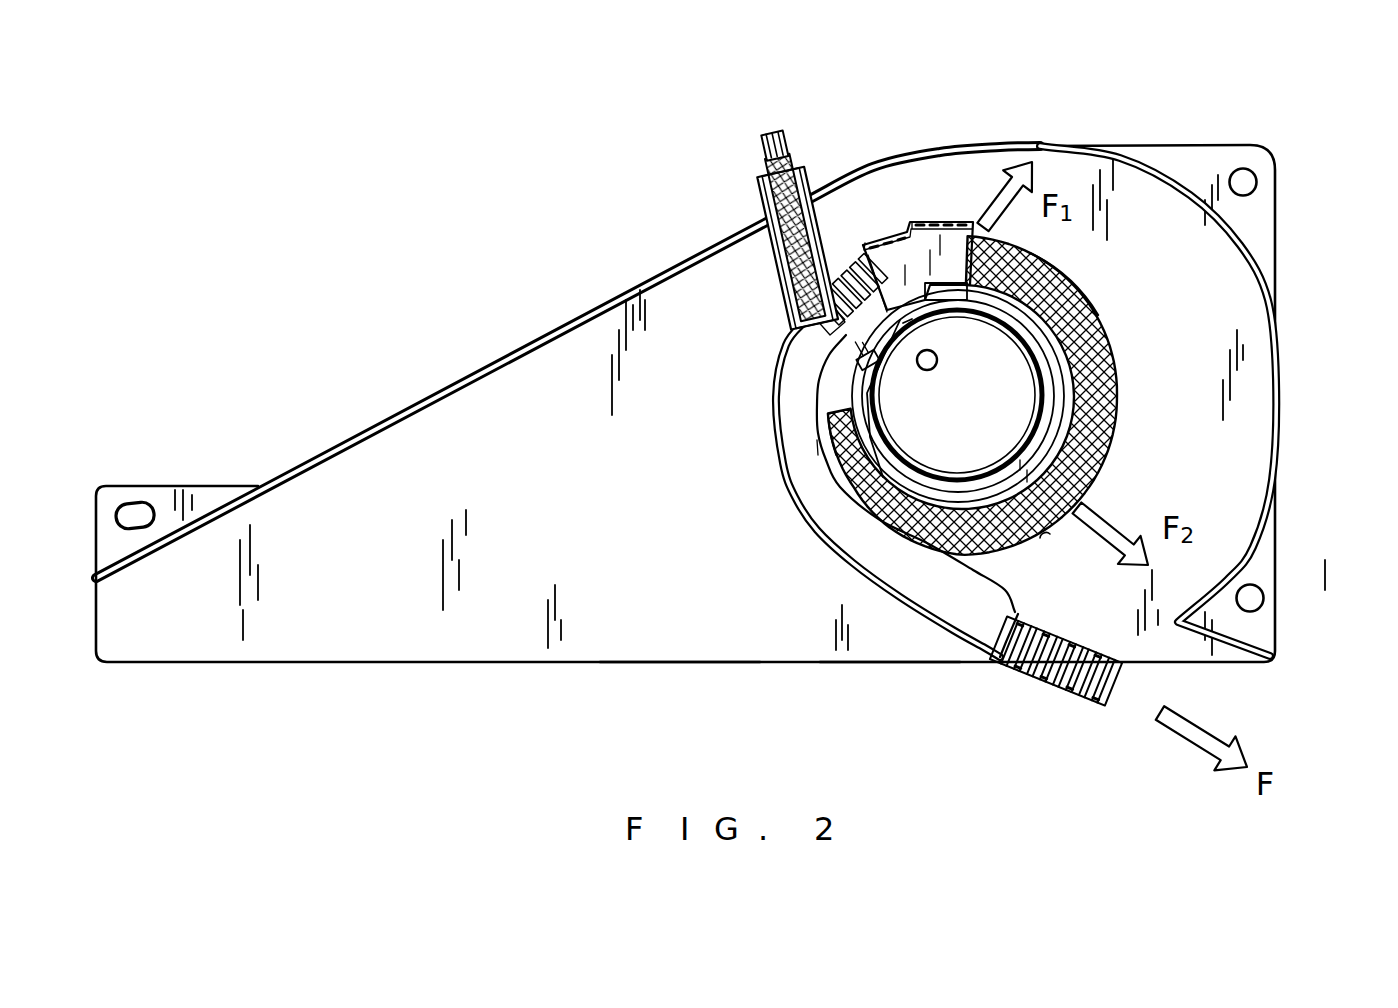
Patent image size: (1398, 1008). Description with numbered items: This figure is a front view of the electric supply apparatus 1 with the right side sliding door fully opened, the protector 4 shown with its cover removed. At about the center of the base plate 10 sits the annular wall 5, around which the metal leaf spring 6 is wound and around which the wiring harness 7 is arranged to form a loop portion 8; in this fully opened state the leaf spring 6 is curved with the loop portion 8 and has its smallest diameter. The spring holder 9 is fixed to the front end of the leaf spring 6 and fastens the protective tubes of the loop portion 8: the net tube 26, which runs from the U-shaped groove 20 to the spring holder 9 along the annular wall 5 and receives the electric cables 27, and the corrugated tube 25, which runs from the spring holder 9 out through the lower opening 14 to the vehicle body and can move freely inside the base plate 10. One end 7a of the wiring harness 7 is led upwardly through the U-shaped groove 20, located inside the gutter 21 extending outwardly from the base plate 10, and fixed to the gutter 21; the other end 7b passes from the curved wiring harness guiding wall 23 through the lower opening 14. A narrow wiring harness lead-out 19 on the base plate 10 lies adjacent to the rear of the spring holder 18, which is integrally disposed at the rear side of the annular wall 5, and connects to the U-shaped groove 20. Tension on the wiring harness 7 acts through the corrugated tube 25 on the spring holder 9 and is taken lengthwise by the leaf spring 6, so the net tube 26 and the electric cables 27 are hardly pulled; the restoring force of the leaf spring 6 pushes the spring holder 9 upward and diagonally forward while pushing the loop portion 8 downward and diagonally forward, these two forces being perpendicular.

The electric supply apparatus 1 is at (1361, 205).
The protector 4 is at (1284, 291).
The annular wall 5 is at (1048, 392).
The leaf spring 6 is at (1042, 532).
The wiring harness 7 is at (875, 487).
The one end of the wiring harness 7a is at (789, 165).
The other end of the wiring harness 7b is at (1078, 697).
The loop portion 8 is at (943, 409).
The spring holder 9 is at (918, 222).
The base plate 10 is at (735, 632).
The lower opening 14 is at (886, 664).
The spring holder 18 is at (856, 364).
The wiring harness lead-out 19 is at (820, 455).
The U-shaped groove 20 is at (793, 290).
The gutter 21 is at (761, 195).
The wiring harness guiding wall 23 is at (832, 436).
The corrugated tube 25 is at (818, 527).
The net tube 26 is at (1092, 305).
The electric cables 27 is at (758, 142).